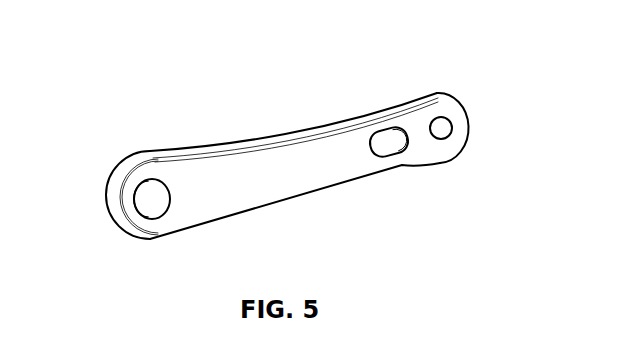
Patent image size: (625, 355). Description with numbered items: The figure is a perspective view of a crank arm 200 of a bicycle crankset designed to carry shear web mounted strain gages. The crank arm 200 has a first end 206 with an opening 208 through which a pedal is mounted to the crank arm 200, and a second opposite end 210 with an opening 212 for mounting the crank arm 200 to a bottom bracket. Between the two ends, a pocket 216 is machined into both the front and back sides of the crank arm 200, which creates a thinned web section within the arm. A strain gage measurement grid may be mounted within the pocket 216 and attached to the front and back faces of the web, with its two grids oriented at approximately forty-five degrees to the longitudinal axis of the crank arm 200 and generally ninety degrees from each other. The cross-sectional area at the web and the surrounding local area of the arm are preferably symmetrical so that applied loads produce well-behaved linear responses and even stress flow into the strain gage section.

The crank arm 200 is at (208, 165).
The first end 206 is at (458, 105).
The opening 208 is at (440, 117).
The second opposite end 210 is at (118, 175).
The opening 212 is at (150, 198).
The pocket 216 is at (387, 150).